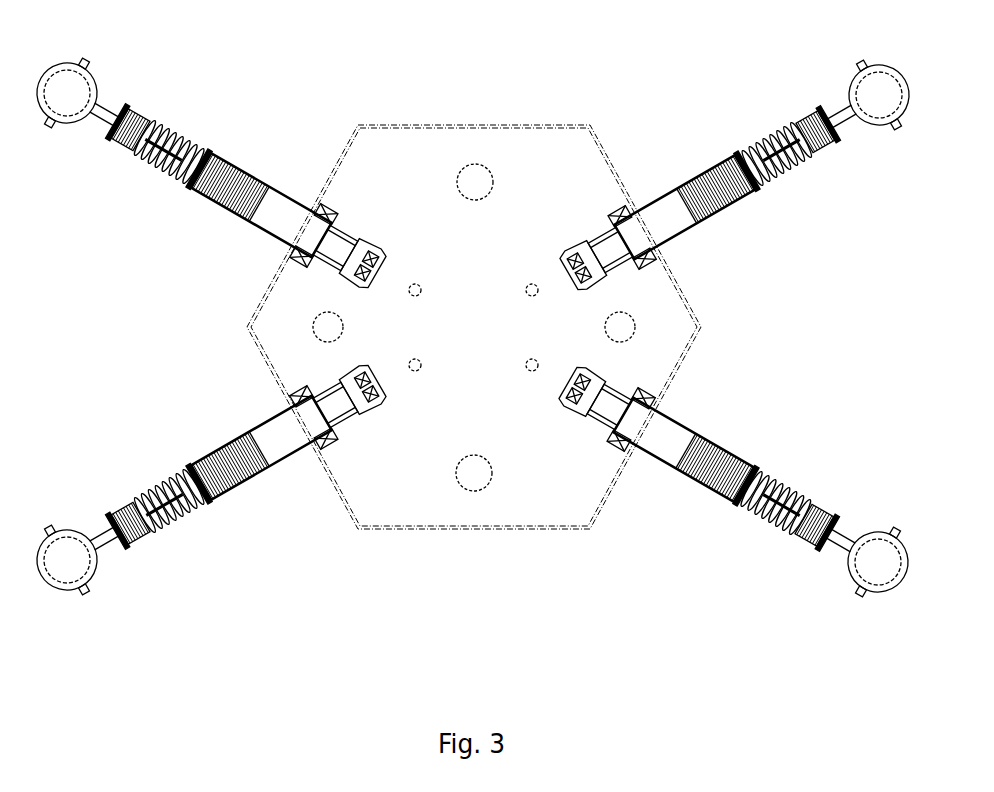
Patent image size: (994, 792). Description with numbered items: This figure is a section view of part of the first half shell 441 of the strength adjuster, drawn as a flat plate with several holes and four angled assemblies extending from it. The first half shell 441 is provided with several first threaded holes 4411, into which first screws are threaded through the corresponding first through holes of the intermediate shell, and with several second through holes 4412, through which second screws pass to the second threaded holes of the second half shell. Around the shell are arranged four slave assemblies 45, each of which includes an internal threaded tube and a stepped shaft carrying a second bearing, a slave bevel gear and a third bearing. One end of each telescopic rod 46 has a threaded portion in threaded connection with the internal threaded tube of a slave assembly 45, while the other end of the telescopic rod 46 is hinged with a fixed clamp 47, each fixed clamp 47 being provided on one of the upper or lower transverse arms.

The first half shell 441 is at (430, 148).
The first threaded hole 4411 is at (413, 370).
The second through hole 4412 is at (485, 187).
The slave assembly 45 is at (300, 205).
The telescopic rod 46 is at (193, 162).
The fixed clamp 47 is at (90, 77).